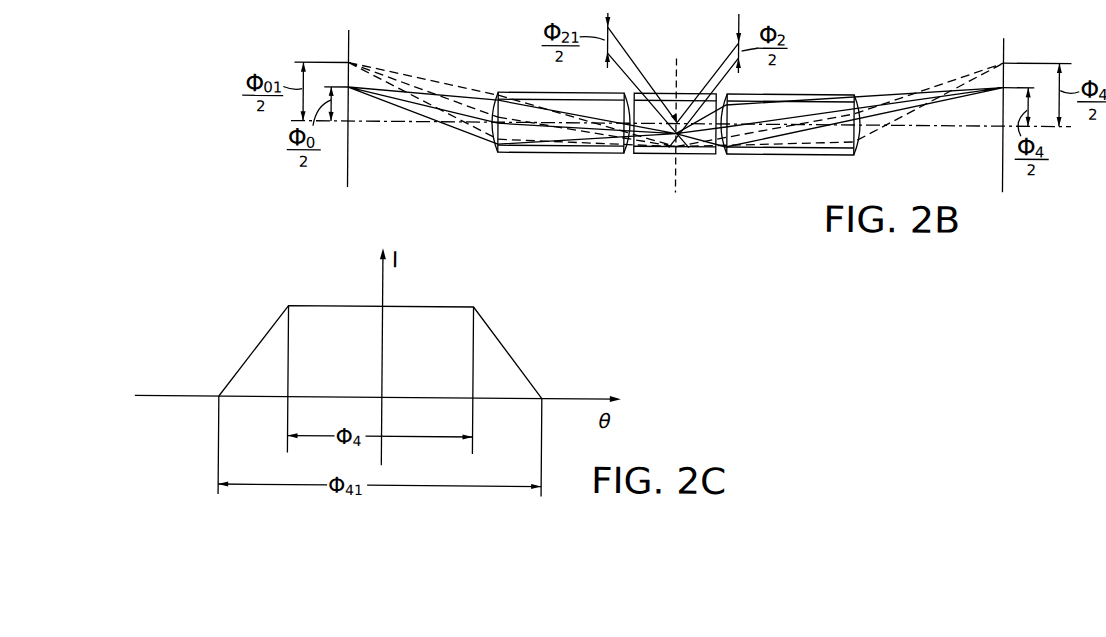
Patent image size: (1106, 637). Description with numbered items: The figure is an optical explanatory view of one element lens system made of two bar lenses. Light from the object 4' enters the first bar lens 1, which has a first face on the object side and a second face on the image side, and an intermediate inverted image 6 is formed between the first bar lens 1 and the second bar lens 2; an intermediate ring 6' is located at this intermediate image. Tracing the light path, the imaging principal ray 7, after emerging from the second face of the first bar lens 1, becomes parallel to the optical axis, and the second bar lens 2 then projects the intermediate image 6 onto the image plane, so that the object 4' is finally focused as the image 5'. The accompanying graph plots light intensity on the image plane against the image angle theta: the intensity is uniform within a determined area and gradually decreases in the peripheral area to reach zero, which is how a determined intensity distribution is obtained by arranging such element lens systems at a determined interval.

The first bar lens 1 is at (531, 142).
The second bar lens 2 is at (795, 147).
The object 4' is at (362, 108).
The image 5' is at (984, 115).
The intermediate inverted image 6 is at (692, 131).
The intermediate ring 6' is at (672, 144).
The imaging principal ray 7 is at (410, 102).